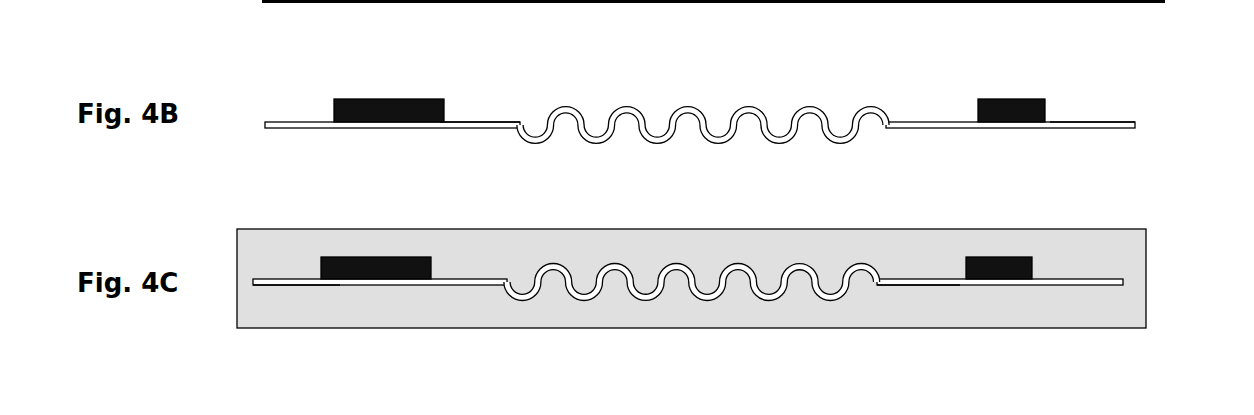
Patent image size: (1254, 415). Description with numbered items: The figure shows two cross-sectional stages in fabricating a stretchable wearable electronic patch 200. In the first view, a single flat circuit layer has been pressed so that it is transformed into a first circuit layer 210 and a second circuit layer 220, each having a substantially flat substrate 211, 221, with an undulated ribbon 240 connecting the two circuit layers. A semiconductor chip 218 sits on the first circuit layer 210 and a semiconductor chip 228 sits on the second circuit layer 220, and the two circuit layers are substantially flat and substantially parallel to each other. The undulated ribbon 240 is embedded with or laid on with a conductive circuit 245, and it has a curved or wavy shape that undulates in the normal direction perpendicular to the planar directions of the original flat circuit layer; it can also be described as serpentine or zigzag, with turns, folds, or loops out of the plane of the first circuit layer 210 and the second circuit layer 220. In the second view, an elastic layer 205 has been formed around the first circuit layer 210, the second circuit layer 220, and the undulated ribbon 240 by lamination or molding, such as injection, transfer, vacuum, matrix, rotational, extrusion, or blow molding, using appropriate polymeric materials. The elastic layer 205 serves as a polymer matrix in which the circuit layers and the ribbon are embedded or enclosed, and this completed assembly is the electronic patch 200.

In FIG. 4C, the electronic patch 200 is at (738, 284).
In FIG. 4C, the elastic layer 205 is at (935, 265).
In FIG. 4B, the first circuit layer 210 is at (463, 128).
In FIG. 4C, the first circuit layer 210 is at (458, 286).
In FIG. 4B, the substantially flat substrate 211 is at (480, 122).
In FIG. 4C, the substantially flat substrate 211 is at (336, 285).
In FIG. 4B, the semiconductor chip 218 is at (383, 107).
In FIG. 4C, the semiconductor chip 218 is at (384, 257).
In FIG. 4B, the second circuit layer 220 is at (1075, 128).
In FIG. 4C, the second circuit layer 220 is at (1087, 286).
In FIG. 4B, the substantially flat substrate 221 is at (1097, 122).
In FIG. 4C, the substantially flat substrate 221 is at (948, 285).
In FIG. 4B, the semiconductor chip 228 is at (1003, 107).
In FIG. 4C, the semiconductor chip 228 is at (1002, 257).
In FIG. 4B, the undulated ribbon 240 is at (703, 94).
In FIG. 4C, the undulated ribbon 240 is at (692, 328).
In FIG. 4B, the conductive circuit 245 is at (706, 122).
In FIG. 4C, the conductive circuit 245 is at (713, 300).